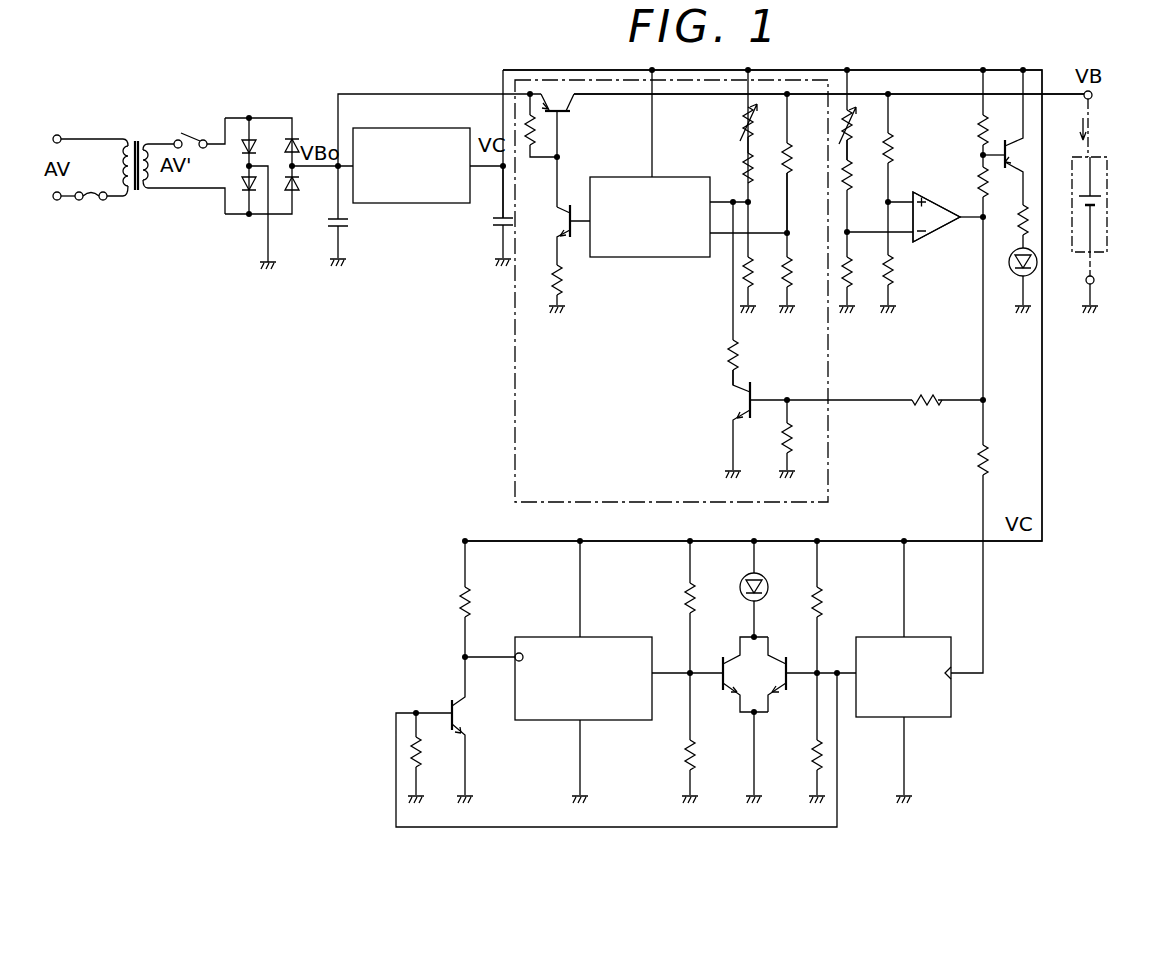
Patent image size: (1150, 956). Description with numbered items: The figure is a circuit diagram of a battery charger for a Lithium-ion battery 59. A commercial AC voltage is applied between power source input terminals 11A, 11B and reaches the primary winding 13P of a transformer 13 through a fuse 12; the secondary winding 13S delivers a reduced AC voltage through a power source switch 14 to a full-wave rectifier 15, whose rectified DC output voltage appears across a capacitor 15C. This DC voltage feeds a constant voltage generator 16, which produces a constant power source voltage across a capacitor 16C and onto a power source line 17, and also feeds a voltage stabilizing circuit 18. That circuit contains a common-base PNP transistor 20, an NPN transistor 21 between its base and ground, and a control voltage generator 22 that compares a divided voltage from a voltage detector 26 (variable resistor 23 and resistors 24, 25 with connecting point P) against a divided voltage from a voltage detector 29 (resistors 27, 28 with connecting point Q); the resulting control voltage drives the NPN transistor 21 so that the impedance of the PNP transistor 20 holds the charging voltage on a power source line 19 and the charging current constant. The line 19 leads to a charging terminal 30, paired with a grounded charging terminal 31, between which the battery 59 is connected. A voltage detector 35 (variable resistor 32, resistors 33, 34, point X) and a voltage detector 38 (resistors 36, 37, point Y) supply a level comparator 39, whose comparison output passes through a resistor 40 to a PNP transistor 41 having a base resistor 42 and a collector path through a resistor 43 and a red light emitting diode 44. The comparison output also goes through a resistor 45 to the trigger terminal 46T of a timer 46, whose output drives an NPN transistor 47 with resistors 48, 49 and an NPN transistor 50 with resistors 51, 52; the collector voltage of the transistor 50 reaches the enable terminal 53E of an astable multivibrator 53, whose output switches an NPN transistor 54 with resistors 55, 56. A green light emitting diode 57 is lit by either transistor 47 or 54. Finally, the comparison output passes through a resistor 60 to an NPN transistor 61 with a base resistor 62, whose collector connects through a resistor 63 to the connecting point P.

The power source input terminal 11A is at (57, 135).
The power source input terminal 11B is at (58, 201).
The fuse 12 is at (86, 192).
The transformer 13 is at (133, 135).
The primary winding 13P is at (119, 197).
The secondary winding 13S is at (148, 194).
The power source switch 14 is at (191, 136).
The full-wave rectifier 15 is at (247, 219).
The capacitor 15C is at (350, 221).
The constant voltage generator 16 is at (372, 126).
The capacitor 16C is at (496, 224).
The power source line 17 is at (502, 84).
The voltage stabilizing circuit 18 is at (515, 356).
The power source line 19 is at (935, 96).
The PNP transistor 20 is at (572, 112).
The NPN transistor 21 is at (558, 222).
The control voltage generator 22 is at (626, 176).
The variable resistor 23 is at (741, 120).
The resistor 24 is at (738, 168).
The resistor 25 is at (759, 296).
The voltage detector 26 is at (735, 142).
The resistor 27 is at (778, 160).
The resistor 28 is at (792, 268).
The voltage detector 29 is at (801, 223).
The charging terminal 30 is at (1092, 99).
The charging terminal 31 is at (1094, 279).
The variable resistor 32 is at (852, 128).
The resistor 33 is at (852, 192).
The resistor 34 is at (854, 285).
The voltage detector 35 is at (854, 160).
The resistor 36 is at (896, 132).
The resistor 37 is at (911, 282).
The voltage detector 38 is at (902, 246).
The level comparator 39 is at (930, 197).
The resistor 40 is at (990, 180).
The PNP transistor 41 is at (1004, 132).
The resistor 42 is at (976, 114).
The resistor 43 is at (1017, 220).
The light emitting diode 44 is at (1015, 273).
The resistor 45 is at (978, 460).
The timer 46 is at (947, 632).
The trigger terminal 46T is at (961, 679).
The NPN transistor 47 is at (788, 658).
The resistor 48 is at (827, 606).
The resistor 49 is at (808, 758).
The NPN transistor 50 is at (445, 704).
The resistor 51 is at (426, 744).
The resistor 52 is at (457, 605).
The astable multivibrator 53 is at (611, 637).
The enable terminal 53E is at (513, 663).
The NPN transistor 54 is at (718, 658).
The resistor 55 is at (682, 598).
The resistor 56 is at (697, 760).
The light emitting diode 57 is at (741, 584).
The battery 59 is at (1108, 220).
The resistor 60 is at (916, 393).
The NPN transistor 61 is at (738, 401).
The resistor 62 is at (780, 440).
The resistor 63 is at (728, 354).